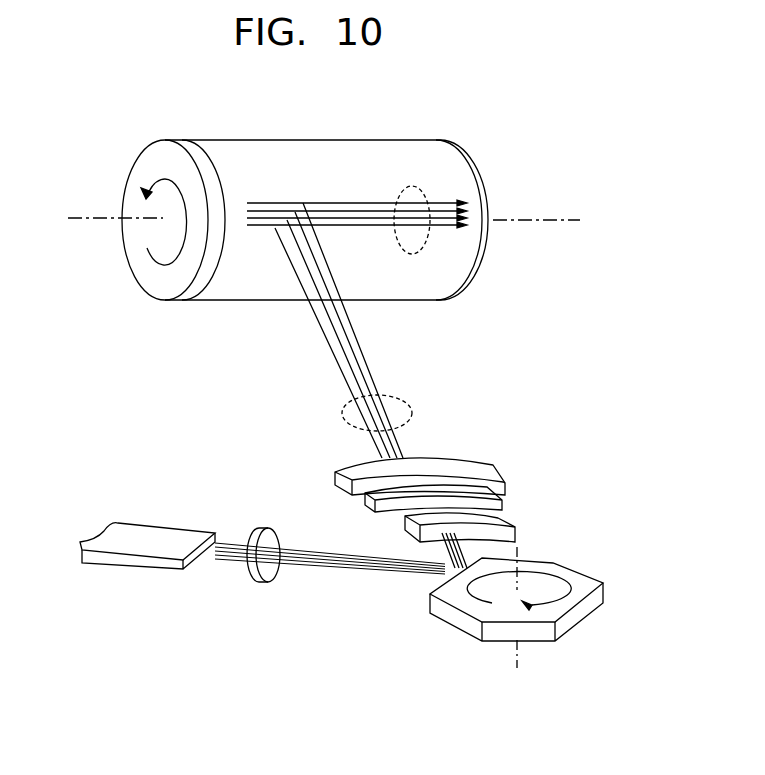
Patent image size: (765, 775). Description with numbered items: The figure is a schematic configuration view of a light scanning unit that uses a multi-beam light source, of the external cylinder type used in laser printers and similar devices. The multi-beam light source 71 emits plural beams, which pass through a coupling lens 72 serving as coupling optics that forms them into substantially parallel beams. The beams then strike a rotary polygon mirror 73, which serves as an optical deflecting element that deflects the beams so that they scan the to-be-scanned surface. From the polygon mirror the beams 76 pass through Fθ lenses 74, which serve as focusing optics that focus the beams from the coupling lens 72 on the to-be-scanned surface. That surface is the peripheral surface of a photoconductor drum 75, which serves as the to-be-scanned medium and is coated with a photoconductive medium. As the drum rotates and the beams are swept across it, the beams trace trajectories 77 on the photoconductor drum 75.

The multi-beam light source 71 is at (113, 568).
The coupling lens 72 is at (265, 582).
The rotary polygon mirror 73 is at (455, 630).
The Fθ lenses 74 is at (485, 472).
The photoconductor drum 75 is at (187, 300).
The beams 76 is at (403, 400).
The trajectories of the beams 77 is at (427, 242).